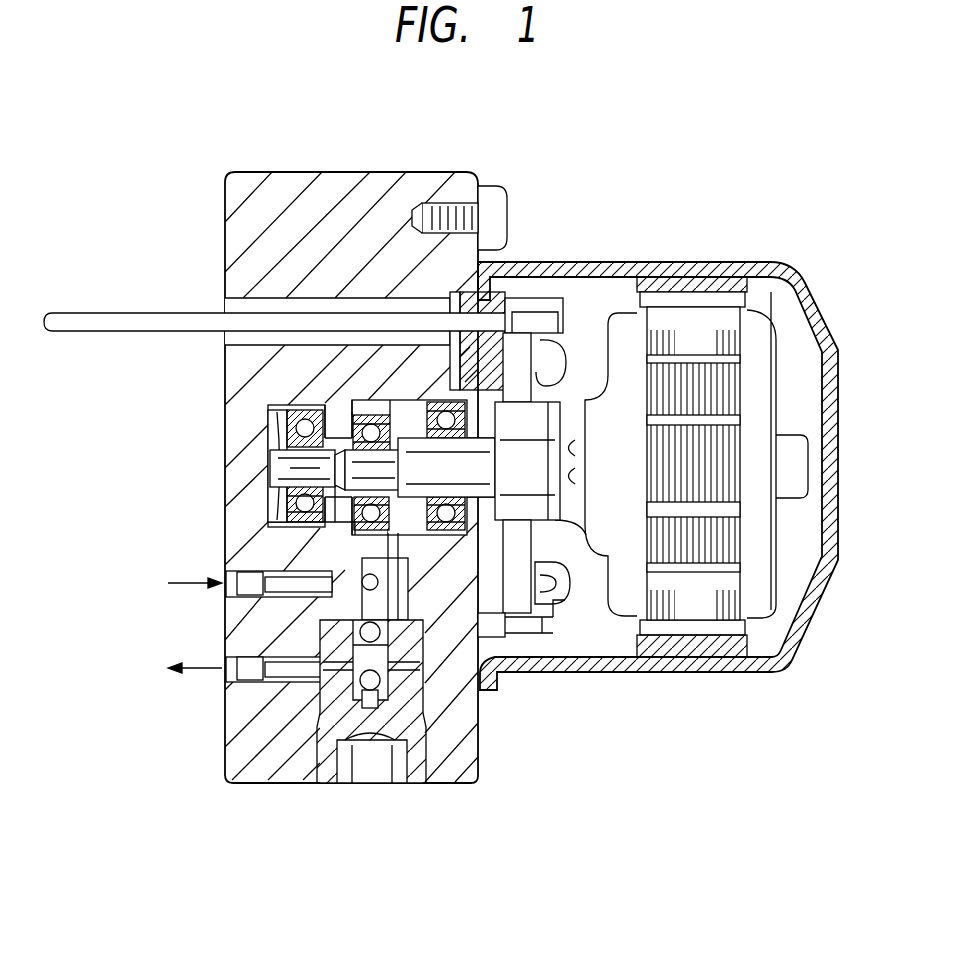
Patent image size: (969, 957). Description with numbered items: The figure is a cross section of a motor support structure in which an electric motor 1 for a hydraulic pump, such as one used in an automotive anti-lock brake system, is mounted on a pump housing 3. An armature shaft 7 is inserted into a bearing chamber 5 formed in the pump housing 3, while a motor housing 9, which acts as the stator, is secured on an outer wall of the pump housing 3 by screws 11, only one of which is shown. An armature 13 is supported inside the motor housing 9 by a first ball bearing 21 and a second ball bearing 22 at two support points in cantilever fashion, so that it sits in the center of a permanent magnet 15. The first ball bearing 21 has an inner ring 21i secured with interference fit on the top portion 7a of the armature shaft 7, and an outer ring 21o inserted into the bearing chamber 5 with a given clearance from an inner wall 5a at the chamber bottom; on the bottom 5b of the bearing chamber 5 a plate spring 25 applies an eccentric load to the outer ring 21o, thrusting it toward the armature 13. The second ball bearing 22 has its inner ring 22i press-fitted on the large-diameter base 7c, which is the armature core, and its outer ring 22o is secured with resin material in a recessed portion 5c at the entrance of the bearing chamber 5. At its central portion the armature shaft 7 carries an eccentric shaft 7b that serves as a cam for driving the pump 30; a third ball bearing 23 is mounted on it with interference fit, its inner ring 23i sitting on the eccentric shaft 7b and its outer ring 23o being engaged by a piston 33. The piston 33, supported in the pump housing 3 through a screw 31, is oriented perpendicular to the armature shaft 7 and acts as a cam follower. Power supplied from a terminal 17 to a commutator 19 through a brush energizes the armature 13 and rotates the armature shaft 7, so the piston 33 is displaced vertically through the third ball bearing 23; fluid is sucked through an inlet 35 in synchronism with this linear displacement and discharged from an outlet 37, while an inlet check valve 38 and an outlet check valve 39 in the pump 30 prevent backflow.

The electric motor 1 is at (441, 465).
The pump housing 3 is at (448, 192).
The bearing chamber 5 is at (408, 518).
The inner wall 5a is at (290, 425).
The bottom 5b is at (270, 422).
The recessed portion 5c is at (449, 398).
The armature shaft 7 is at (302, 454).
The top portion 7a is at (368, 470).
The eccentric shaft 7b is at (332, 470).
The large-diameter base 7c is at (300, 460).
The motor housing 9 is at (797, 305).
The screws 11 is at (505, 204).
The armature 13 is at (683, 330).
The permanent magnet 15 is at (717, 300).
The terminal 17 is at (86, 318).
The commutator 19 is at (560, 540).
The first ball bearing 21 is at (223, 528).
The inner ring 21i is at (290, 497).
The outer ring 21o is at (296, 522).
The second ball bearing 22 is at (394, 310).
The inner ring 22i is at (415, 428).
The outer ring 22o is at (447, 402).
The third ball bearing 23 is at (325, 368).
The bearing inner race 23i is at (356, 430).
The outer ring 23o is at (372, 414).
The plate spring 25 is at (282, 418).
The pump 30 is at (234, 685).
The screw 31 is at (370, 730).
The piston 33 is at (328, 534).
The inlet 35 is at (250, 593).
The outlet 37 is at (253, 679).
The inlet check valve 38 is at (412, 633).
The outlet check valve 39 is at (410, 704).